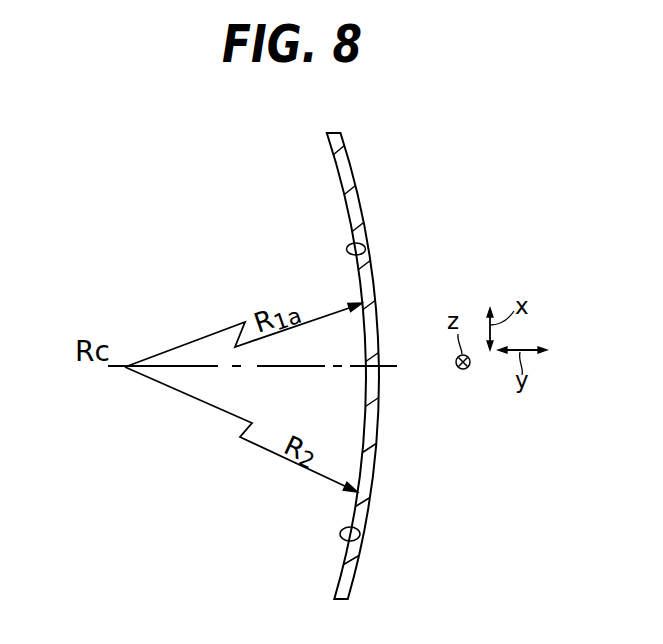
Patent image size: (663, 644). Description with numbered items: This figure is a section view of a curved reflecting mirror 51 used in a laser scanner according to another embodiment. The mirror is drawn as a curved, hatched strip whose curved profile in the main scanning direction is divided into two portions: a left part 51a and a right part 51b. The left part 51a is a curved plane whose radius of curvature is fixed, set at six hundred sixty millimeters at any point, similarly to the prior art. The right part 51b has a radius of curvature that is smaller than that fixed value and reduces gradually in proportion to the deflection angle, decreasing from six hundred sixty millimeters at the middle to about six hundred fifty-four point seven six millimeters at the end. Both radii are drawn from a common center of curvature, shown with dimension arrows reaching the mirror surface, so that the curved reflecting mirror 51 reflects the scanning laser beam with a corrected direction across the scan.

The curved reflecting mirror 51 is at (349, 212).
The left part 51a is at (366, 245).
The right part 51b is at (359, 531).